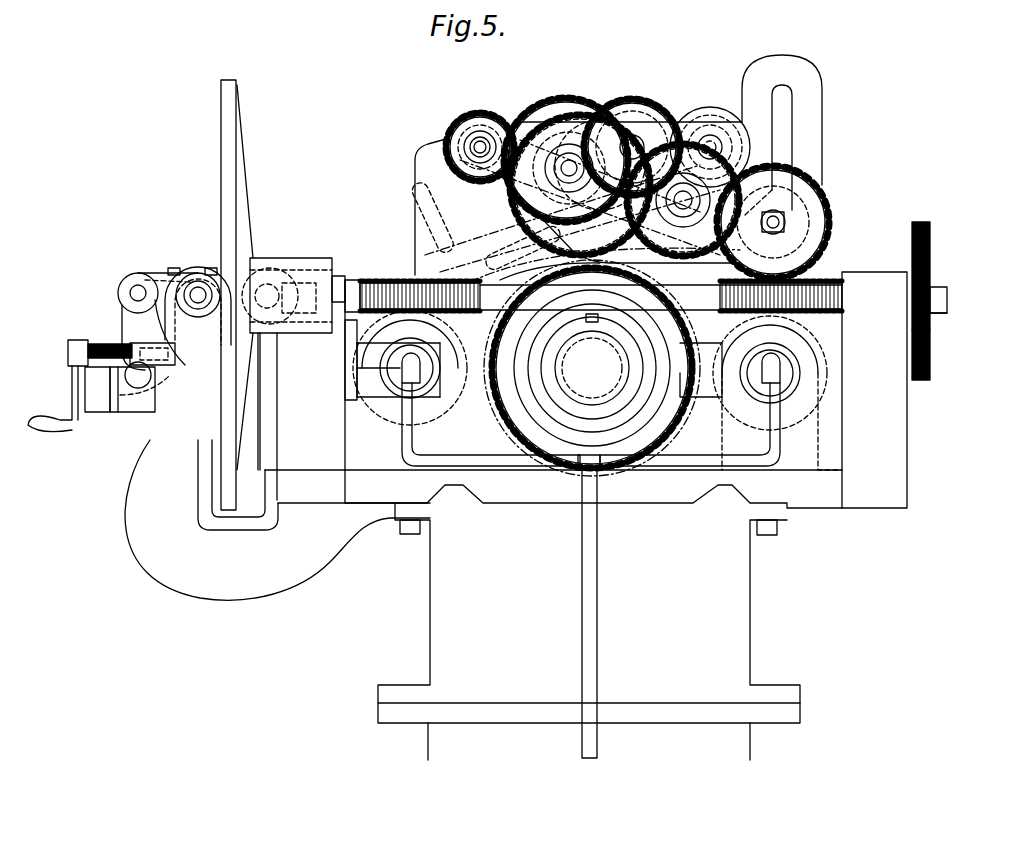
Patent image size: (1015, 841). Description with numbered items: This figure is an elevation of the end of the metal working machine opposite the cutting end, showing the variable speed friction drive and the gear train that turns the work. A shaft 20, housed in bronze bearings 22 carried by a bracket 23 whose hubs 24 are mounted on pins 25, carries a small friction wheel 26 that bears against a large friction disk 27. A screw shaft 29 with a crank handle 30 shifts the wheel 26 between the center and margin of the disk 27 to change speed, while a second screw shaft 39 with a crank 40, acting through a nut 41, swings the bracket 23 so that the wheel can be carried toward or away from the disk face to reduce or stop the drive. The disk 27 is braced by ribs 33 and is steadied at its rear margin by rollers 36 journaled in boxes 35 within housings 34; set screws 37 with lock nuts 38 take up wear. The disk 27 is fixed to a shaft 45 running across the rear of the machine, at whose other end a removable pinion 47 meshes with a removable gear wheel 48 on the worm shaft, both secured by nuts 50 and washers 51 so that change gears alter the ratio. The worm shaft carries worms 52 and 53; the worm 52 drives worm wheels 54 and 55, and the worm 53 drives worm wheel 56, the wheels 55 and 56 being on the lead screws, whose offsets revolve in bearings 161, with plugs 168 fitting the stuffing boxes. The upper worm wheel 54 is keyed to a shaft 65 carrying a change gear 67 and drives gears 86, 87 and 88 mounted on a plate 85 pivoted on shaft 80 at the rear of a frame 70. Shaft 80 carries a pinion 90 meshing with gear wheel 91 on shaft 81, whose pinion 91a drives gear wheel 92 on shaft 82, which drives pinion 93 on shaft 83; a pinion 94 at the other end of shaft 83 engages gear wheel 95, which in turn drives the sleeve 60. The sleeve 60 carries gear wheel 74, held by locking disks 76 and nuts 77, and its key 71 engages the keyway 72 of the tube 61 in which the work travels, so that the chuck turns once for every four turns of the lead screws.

The shaft 20 is at (198, 287).
The bronze bearings 22 is at (172, 283).
The bracket 23 is at (162, 405).
The hubs 24 is at (118, 412).
The pins 25 is at (96, 405).
The friction wheel 26 is at (148, 277).
The friction disk 27 is at (240, 123).
The screw shaft 29 is at (130, 293).
The crank handle 30 is at (130, 325).
The ribs 33 is at (246, 215).
The housings 34 is at (332, 262).
The boxes 35 is at (300, 275).
The rollers 36 is at (270, 262).
The set screws 37 is at (353, 282).
The lock nuts 38 is at (333, 318).
The screw shaft 39 is at (68, 352).
The crank 40 is at (70, 372).
The nut 41 is at (150, 345).
The shaft 45 is at (661, 296).
The removable pinion 47 is at (930, 335).
The removable gear wheel 48 is at (930, 250).
The nuts 50 is at (940, 300).
The washers 51 is at (932, 322).
The worm 52 is at (858, 290).
The worm 53 is at (385, 282).
The worm wheel 54 is at (828, 218).
The worm wheel 55 is at (777, 393).
The worm wheel 56 is at (410, 368).
The sleeve 60 is at (585, 425).
The tube 61 is at (553, 371).
The shaft 65 is at (778, 228).
The change gear wheel 67 is at (786, 224).
The frame 70 is at (418, 192).
The key 71 is at (640, 322).
The keyway 72 is at (592, 322).
The gear wheel 74 is at (530, 440).
The locking disks 76 is at (650, 430).
The nuts 77 is at (635, 425).
The shaft 80 is at (478, 147).
The shaft 81 is at (556, 150).
The shaft 82 is at (638, 140).
The shaft 83 is at (712, 147).
The plate 85 is at (580, 185).
The gear 86 is at (675, 150).
The gear 87 is at (555, 100).
The gear 88 is at (470, 118).
The pinion 90 is at (482, 112).
The gear wheel 91 is at (560, 130).
The pinion 91a is at (592, 115).
The gear wheel 92 is at (640, 105).
The pinion 93 is at (710, 125).
The pinion 94 is at (740, 147).
The gear wheel 95 is at (650, 262).
The bearings 161 is at (557, 379).
The plugs 168 is at (591, 409).